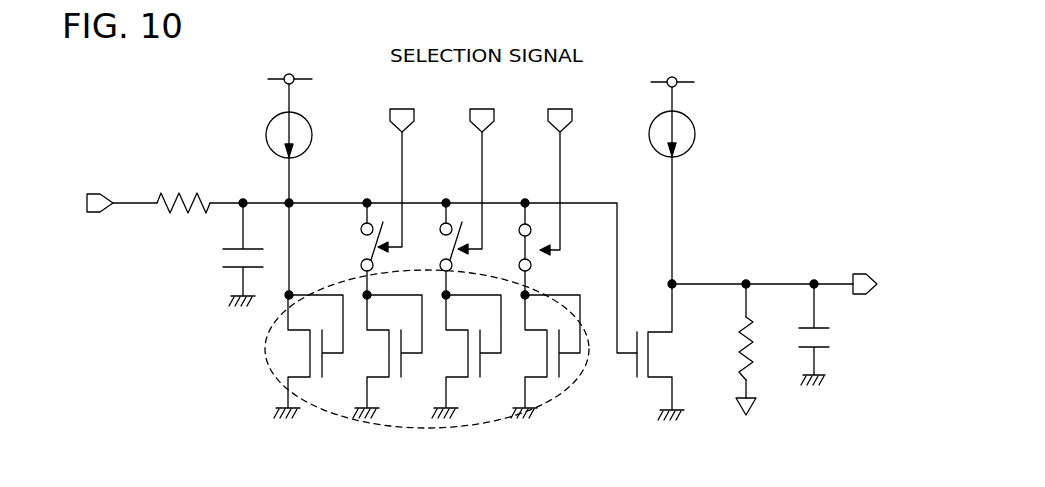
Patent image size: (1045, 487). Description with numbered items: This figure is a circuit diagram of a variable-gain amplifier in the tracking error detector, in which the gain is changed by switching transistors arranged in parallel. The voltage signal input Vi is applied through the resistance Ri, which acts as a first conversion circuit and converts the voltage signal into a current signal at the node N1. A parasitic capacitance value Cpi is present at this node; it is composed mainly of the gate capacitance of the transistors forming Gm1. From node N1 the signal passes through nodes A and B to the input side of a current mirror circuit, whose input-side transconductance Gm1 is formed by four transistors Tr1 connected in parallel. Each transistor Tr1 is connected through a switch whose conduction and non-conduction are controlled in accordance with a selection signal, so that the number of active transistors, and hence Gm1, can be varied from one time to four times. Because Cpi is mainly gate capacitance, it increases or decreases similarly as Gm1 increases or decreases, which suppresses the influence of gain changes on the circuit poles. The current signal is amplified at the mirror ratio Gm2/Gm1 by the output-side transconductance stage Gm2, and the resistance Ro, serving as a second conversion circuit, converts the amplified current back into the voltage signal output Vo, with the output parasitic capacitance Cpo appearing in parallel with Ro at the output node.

The voltage signal input Vi is at (99, 181).
The resistance (first conversion circuit) Ri is at (183, 188).
The node N1 is at (240, 187).
The parasitic capacitance value Cpi is at (210, 254).
The node A is at (292, 200).
The node B is at (292, 293).
The transistor Tr1 is at (424, 354).
The transconductance of input side of current mirror Gm1 is at (427, 373).
The transconductance of output side of current mirror Gm2 is at (679, 352).
The resistance (second conversion circuit) Ro is at (760, 349).
The output parasitic capacitance Cpo is at (839, 334).
The voltage signal output Vo is at (859, 267).